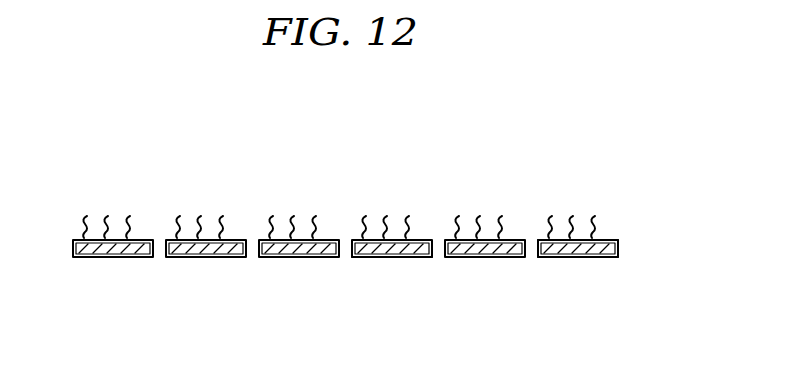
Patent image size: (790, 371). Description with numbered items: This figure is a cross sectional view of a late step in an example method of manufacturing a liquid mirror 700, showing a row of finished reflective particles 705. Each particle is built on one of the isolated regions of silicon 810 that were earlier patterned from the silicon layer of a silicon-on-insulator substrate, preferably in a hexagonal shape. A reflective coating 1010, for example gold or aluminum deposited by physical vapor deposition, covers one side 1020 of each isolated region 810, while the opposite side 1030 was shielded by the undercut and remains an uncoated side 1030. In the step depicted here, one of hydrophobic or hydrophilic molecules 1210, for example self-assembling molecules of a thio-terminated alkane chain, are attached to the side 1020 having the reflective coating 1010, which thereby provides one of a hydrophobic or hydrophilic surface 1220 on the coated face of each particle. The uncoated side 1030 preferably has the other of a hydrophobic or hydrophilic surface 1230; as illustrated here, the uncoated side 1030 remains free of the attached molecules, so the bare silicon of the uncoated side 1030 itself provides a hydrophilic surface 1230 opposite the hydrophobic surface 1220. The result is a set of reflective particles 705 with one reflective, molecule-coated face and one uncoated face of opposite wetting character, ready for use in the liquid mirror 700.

The liquid mirror 700 is at (127, 88).
The reflective particles 705 is at (590, 123).
The isolated regions of silicon 810 is at (616, 246).
The reflective coating 1010 is at (555, 239).
The one side of the isolated regions 1020 is at (612, 239).
The uncoated side 1030 is at (570, 257).
The hydrophobic or hydrophilic molecules 1210 is at (505, 236).
The hydrophobic or hydrophilic surface 1220 is at (390, 196).
The hydrophilic or hydrophobic surface of the uncoated side 1230 is at (391, 273).